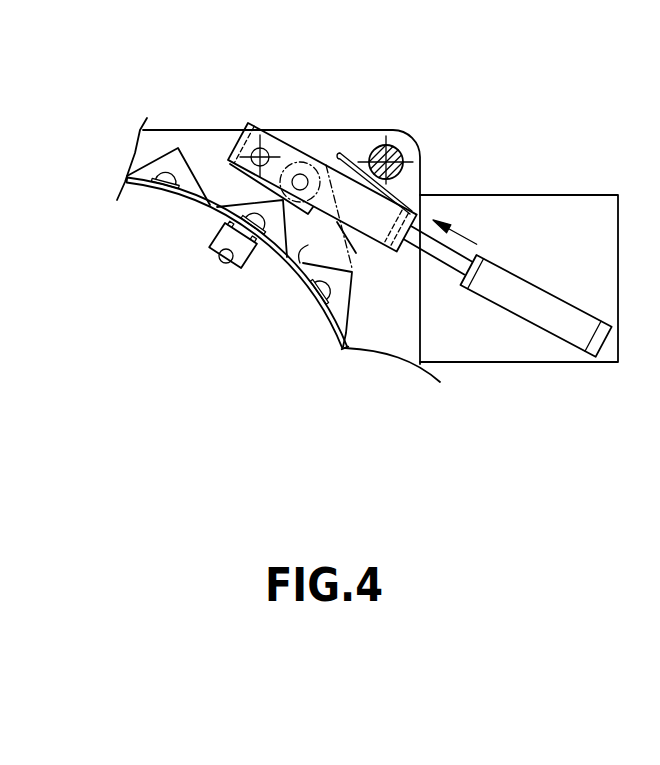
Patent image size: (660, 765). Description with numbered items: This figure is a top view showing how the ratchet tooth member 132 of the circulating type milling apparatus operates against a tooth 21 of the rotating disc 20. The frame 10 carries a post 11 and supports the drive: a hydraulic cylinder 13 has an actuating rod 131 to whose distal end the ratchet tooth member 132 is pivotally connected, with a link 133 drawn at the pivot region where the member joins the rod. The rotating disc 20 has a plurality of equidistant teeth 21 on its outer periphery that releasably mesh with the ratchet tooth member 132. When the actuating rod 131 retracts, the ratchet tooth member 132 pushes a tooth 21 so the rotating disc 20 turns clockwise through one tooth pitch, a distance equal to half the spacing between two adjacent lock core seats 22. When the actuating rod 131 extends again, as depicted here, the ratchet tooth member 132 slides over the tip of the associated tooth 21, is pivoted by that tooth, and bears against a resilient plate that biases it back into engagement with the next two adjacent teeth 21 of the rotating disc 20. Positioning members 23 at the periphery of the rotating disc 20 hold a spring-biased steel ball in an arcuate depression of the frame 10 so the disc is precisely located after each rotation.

The frame 10 is at (287, 130).
The post 11 is at (398, 149).
The cylinder 13 is at (535, 282).
The actuating rod 131 is at (445, 252).
The ratchet tooth member 132 is at (335, 168).
The link 133 is at (341, 156).
The rotating disc 20 is at (196, 212).
The tooth 21 is at (350, 300).
The lock core seat 22 is at (213, 250).
The positioning member 23 is at (322, 306).